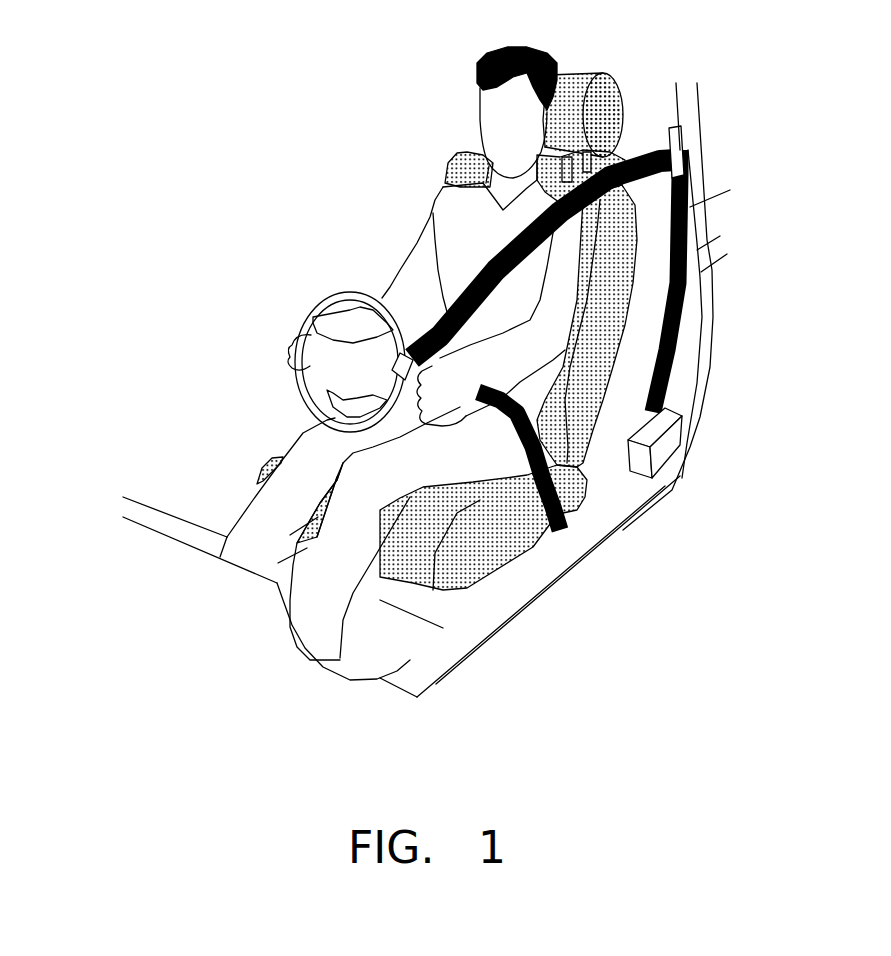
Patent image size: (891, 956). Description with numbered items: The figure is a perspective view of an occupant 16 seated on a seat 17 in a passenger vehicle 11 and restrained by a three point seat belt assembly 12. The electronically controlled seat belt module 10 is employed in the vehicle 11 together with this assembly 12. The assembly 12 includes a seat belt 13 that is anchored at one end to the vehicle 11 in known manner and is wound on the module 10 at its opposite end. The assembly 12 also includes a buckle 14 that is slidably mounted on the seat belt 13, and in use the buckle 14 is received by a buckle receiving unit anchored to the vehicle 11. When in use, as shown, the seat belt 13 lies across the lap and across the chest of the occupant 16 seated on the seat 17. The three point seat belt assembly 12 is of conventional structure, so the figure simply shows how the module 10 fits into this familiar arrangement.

The electronically controlled seat belt module 10 is at (665, 452).
The passenger vehicle 11 is at (412, 673).
The three point seat belt assembly 12 is at (692, 213).
The seat belt 13 is at (567, 517).
The buckle 14 is at (400, 367).
The occupant 16 is at (450, 220).
The seat 17 is at (453, 155).